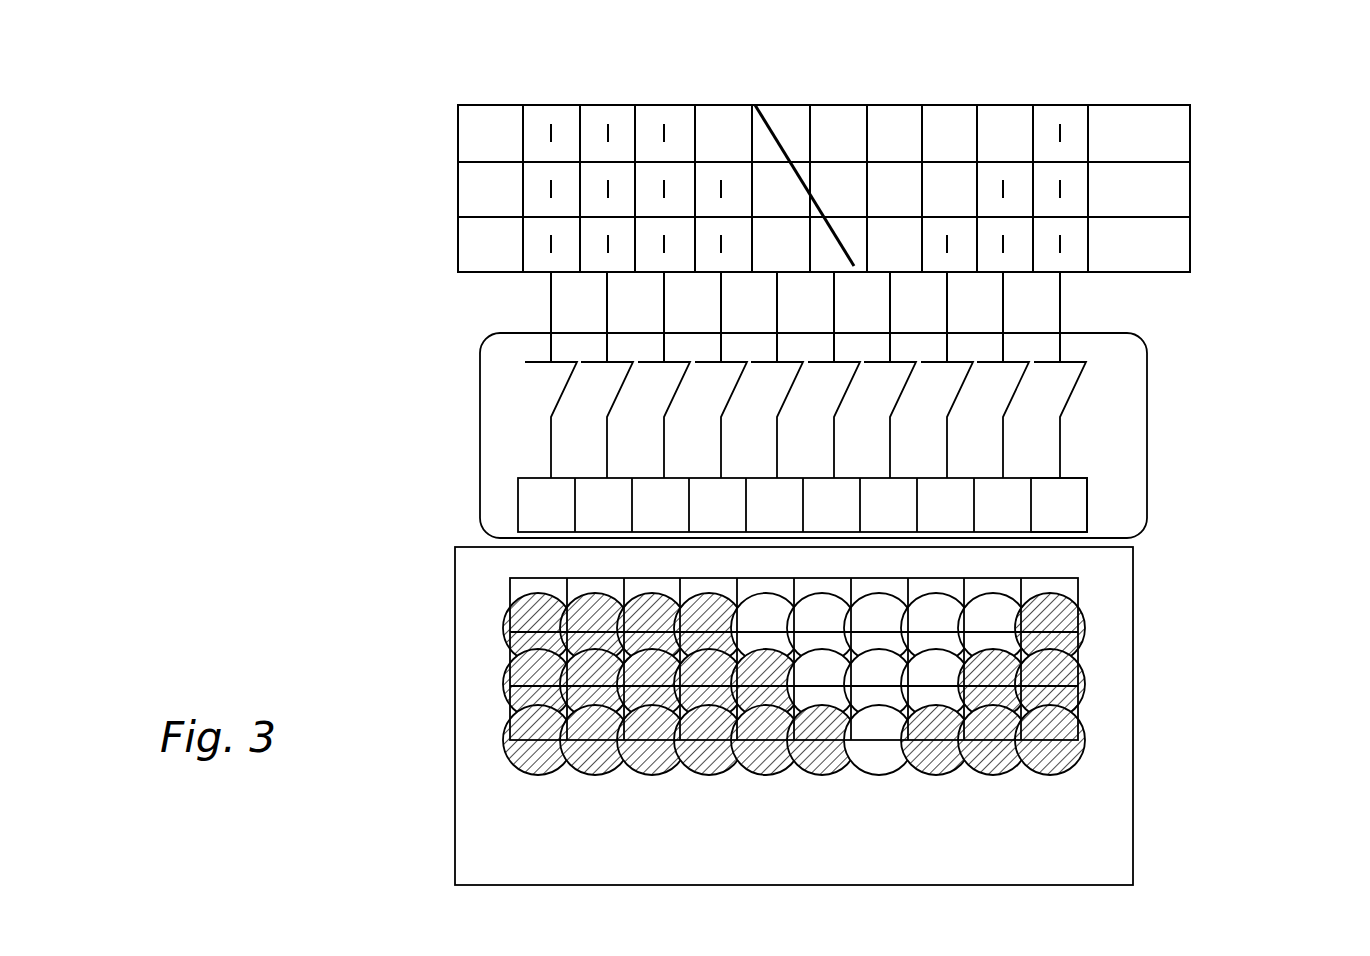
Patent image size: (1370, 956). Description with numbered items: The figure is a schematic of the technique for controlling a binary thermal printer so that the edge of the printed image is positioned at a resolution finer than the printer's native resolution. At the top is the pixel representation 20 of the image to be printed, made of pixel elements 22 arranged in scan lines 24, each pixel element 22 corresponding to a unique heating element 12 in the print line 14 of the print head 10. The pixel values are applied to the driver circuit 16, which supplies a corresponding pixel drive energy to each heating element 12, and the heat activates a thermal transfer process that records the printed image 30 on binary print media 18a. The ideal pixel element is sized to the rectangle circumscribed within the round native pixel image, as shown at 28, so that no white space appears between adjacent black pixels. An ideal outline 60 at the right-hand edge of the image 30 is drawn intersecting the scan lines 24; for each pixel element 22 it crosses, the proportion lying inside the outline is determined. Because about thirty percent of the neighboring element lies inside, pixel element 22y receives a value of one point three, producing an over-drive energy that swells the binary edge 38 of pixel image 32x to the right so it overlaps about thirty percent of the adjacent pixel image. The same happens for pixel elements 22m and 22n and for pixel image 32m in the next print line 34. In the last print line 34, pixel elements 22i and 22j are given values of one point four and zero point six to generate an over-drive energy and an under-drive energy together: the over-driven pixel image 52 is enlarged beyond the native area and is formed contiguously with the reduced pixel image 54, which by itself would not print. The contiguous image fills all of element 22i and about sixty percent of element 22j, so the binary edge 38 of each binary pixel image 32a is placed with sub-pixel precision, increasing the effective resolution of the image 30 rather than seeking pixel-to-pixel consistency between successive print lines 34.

The print head 10 is at (1147, 368).
The heating element 12 is at (898, 474).
The print line 14 is at (1105, 508).
The driver circuit 16 is at (597, 403).
The print media 18a is at (1133, 845).
The pixel representation 20 is at (897, 165).
The pixel element 22 is at (1005, 104).
The pixel element 22y is at (721, 105).
The pixel element 22m is at (763, 190).
The pixel element 22n is at (850, 172).
The pixel element 22i is at (750, 272).
The pixel element 22j is at (796, 272).
The scan line 24 is at (1190, 195).
The ideal pixel element area 28 is at (512, 618).
The printed image 30 is at (866, 714).
The pixel image 32x is at (690, 593).
The pixel image 32m is at (727, 778).
The binary pixel image 32a is at (963, 777).
The print line 34 is at (1102, 677).
The binary edge 38 is at (876, 703).
The binary pixel image 52 is at (823, 778).
The binary pixel image 54 is at (880, 760).
The ideal outline 60 is at (804, 136).